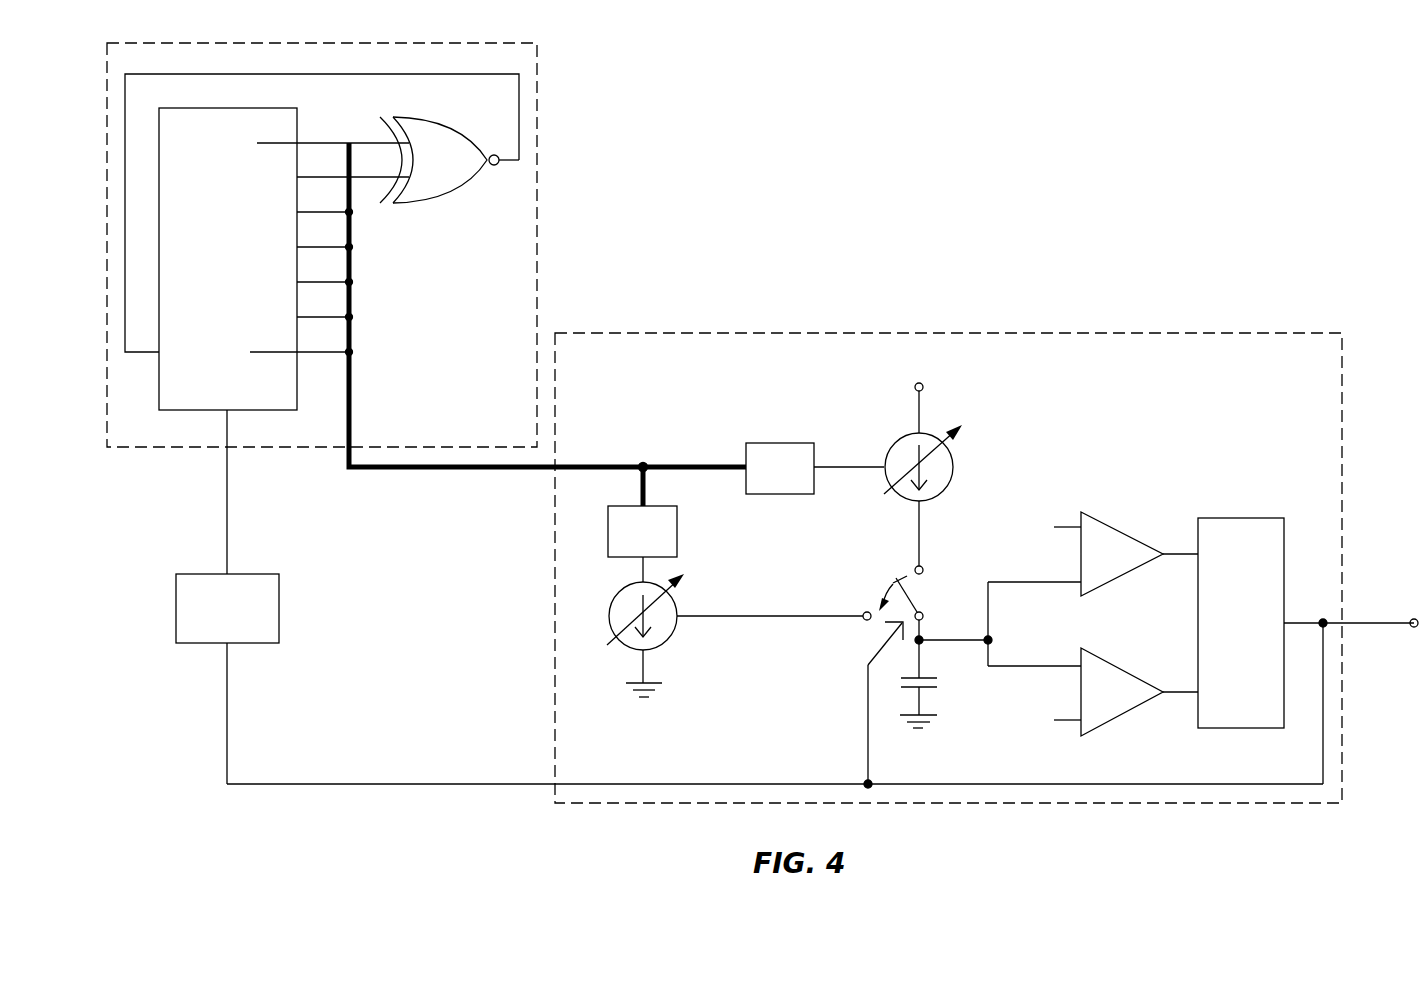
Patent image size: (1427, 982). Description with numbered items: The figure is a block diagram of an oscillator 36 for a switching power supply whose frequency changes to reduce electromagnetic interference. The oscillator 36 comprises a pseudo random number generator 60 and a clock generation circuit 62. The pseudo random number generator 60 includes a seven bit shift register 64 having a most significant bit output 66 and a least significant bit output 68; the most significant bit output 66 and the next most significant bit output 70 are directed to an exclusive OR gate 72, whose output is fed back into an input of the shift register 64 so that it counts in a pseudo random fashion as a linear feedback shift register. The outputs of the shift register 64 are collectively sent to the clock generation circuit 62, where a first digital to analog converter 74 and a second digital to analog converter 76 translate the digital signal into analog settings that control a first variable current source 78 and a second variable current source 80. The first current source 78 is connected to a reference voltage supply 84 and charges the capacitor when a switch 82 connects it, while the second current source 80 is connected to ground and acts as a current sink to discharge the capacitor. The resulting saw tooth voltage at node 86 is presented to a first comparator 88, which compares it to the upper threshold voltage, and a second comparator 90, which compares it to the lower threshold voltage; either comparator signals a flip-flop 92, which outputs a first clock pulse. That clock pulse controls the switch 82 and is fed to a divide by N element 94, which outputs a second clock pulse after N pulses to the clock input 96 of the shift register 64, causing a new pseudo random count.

The oscillator 36 is at (1064, 174).
The pseudo random number generator 60 is at (538, 96).
The clock generation circuit 62 is at (1096, 333).
The shift register 64 is at (241, 289).
The most significant bit output 66 is at (298, 142).
The least significant bit output 68 is at (297, 355).
The next most significant bit output 70 is at (297, 177).
The exclusive OR gate 72 is at (438, 201).
The first digital to analog converter 74 is at (800, 443).
The second digital to analog converter 76 is at (626, 506).
The first variable current source 78 is at (928, 437).
The second variable current source 80 is at (666, 641).
The switch 82 is at (884, 572).
The reference voltage supply 84 is at (923, 384).
The node 86 is at (922, 637).
The first comparator 88 is at (1114, 529).
The second comparator 90 is at (1114, 666).
The flip-flop 92 is at (1256, 631).
The divide by N element 94 is at (256, 574).
The clock input 96 is at (227, 412).